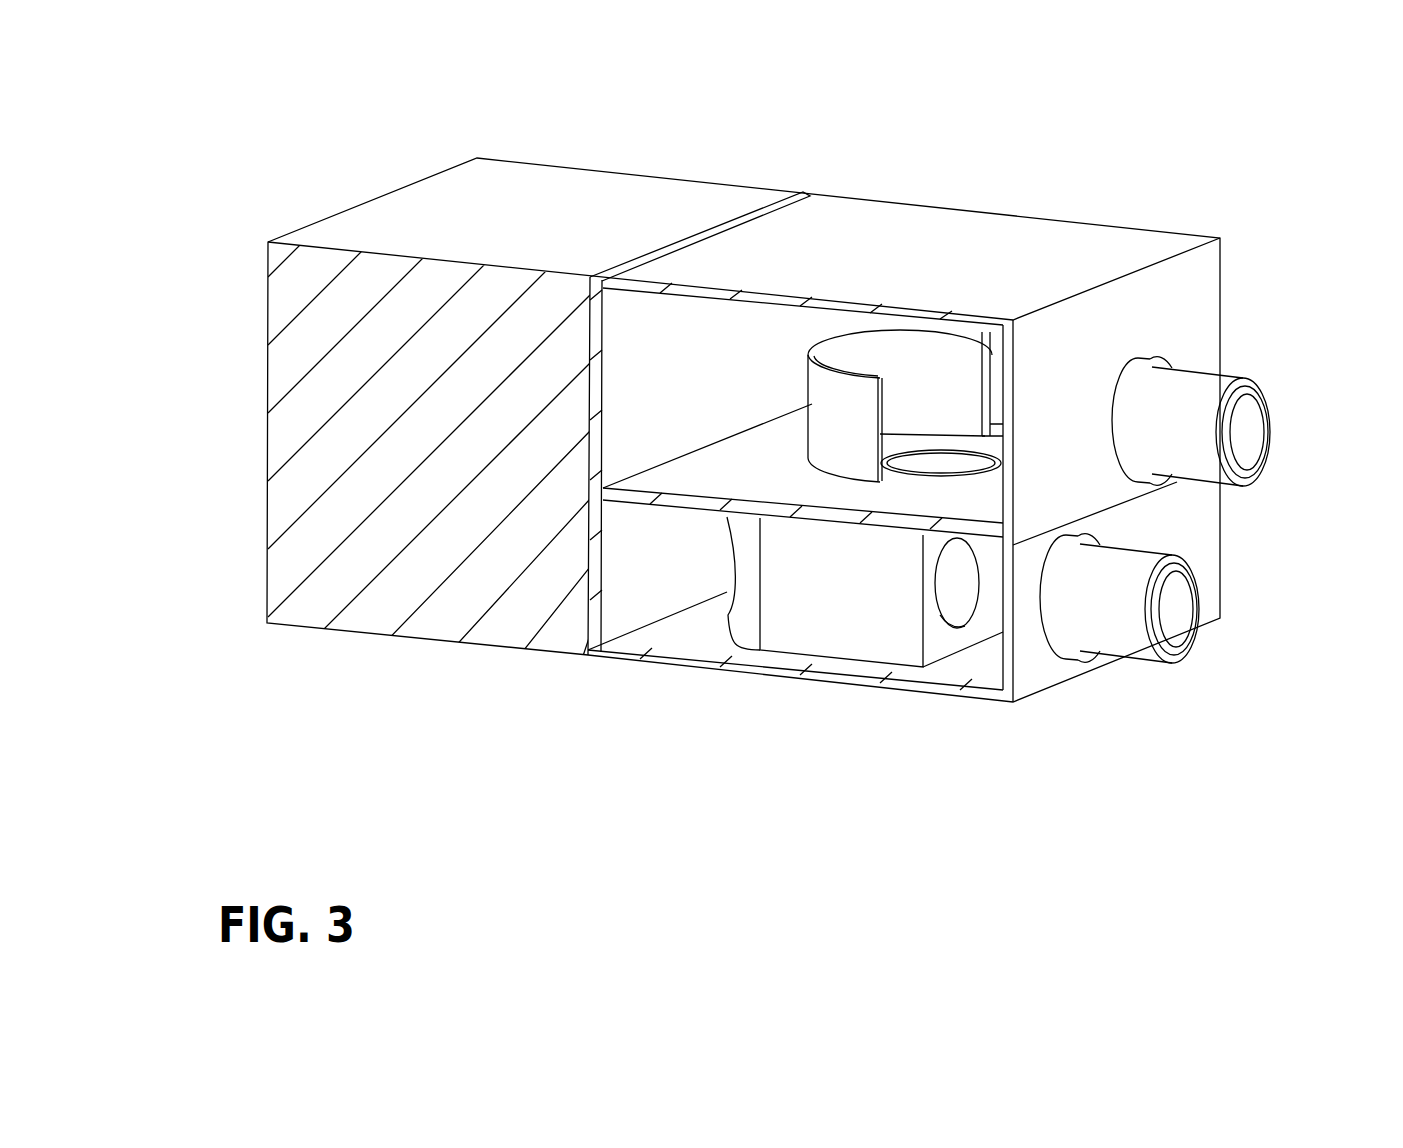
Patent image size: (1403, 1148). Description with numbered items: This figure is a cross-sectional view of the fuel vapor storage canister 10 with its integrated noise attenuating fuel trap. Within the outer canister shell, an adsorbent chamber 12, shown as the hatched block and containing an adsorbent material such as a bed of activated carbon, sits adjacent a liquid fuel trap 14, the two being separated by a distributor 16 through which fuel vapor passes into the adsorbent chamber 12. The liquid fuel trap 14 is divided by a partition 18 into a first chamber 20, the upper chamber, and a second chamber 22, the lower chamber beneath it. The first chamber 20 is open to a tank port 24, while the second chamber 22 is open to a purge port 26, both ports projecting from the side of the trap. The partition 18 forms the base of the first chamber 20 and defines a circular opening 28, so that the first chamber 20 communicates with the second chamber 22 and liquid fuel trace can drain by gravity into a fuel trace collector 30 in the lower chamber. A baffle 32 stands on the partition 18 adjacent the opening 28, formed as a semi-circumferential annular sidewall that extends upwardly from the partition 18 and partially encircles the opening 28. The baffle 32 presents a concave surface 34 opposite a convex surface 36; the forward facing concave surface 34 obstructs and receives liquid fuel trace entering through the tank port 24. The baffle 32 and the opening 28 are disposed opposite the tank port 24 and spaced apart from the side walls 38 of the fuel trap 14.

The fuel vapor storage canister 10 is at (1068, 114).
The adsorbent chamber 12 is at (424, 199).
The liquid fuel trap 14 is at (882, 215).
The distributor 16 is at (722, 227).
The partition 18 is at (687, 497).
The first chamber 20 is at (665, 444).
The second chamber 22 is at (689, 629).
The tank port 24 is at (1221, 388).
The purge port 26 is at (1133, 636).
The opening 28 is at (967, 453).
The fuel trace collector 30 is at (858, 638).
The baffle 32 is at (870, 347).
The concave surface 34 is at (912, 395).
The convex surface 36 is at (822, 438).
The side walls 38 is at (835, 325).